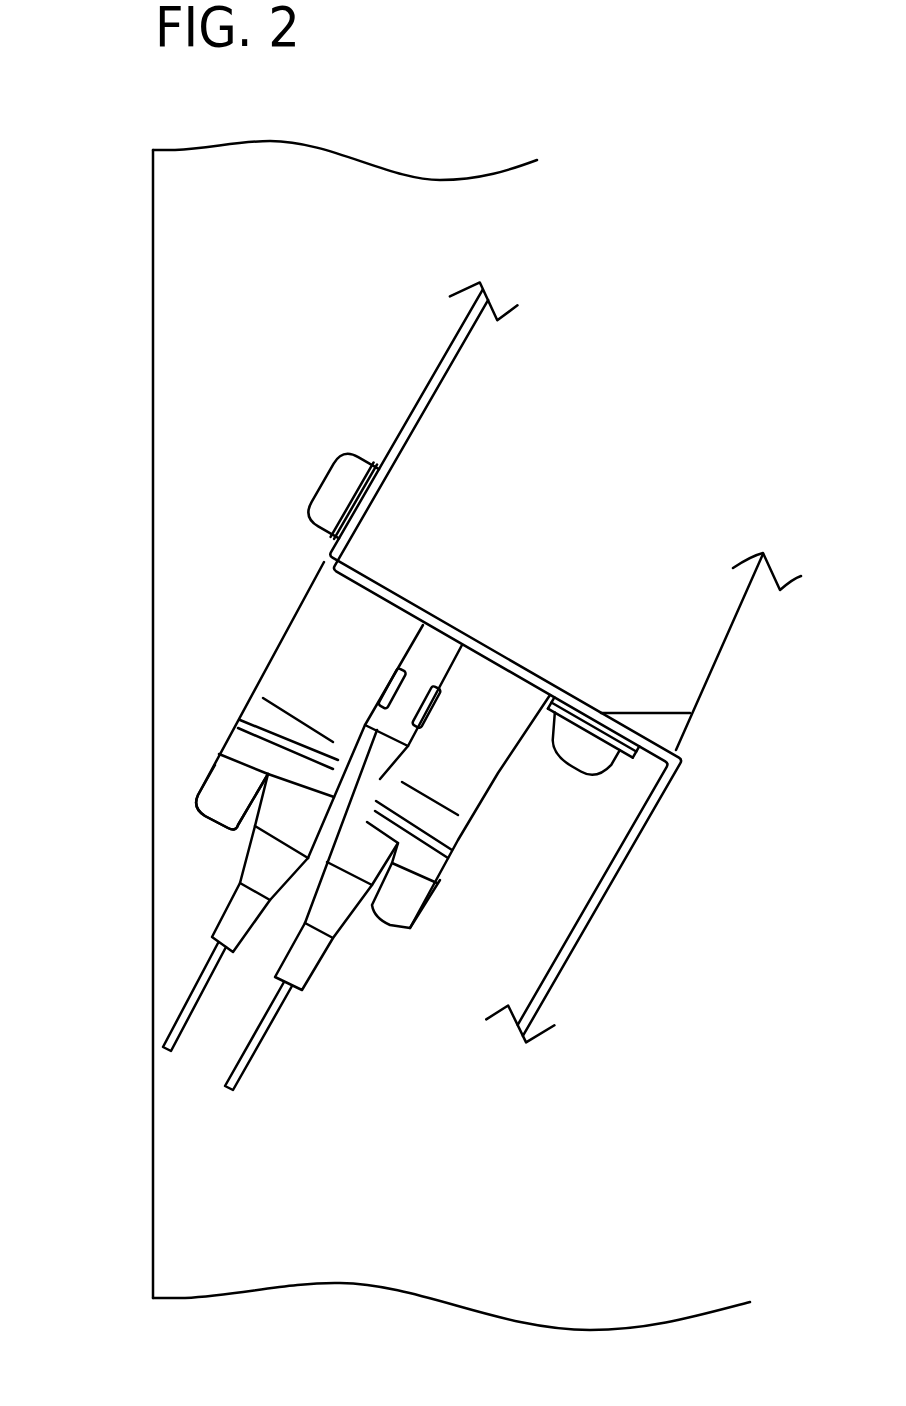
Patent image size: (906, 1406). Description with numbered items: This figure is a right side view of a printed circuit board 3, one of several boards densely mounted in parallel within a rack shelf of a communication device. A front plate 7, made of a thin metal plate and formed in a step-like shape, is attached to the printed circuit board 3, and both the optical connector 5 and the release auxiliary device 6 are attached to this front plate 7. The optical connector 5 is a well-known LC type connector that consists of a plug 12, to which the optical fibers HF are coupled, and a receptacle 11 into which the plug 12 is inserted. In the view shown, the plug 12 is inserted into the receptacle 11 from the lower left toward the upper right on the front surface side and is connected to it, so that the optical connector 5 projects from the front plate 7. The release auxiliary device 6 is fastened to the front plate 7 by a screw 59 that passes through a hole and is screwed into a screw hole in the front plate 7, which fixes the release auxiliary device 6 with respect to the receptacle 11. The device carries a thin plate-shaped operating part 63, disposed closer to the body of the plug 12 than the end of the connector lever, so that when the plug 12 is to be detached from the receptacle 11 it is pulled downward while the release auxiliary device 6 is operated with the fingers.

The printed circuit board 3 is at (191, 250).
The optical connector 5 is at (222, 849).
The release auxiliary device 6 is at (298, 668).
The front plate 7 is at (438, 381).
The receptacle 11 is at (431, 649).
The plug 12 is at (237, 923).
The screw 59 is at (322, 478).
The operating part 63 is at (213, 792).
The optical fibers HF is at (176, 1013).